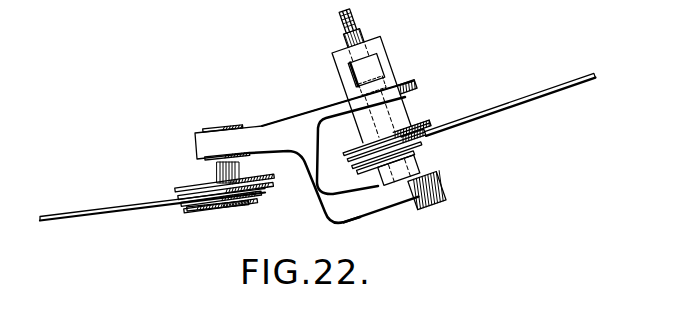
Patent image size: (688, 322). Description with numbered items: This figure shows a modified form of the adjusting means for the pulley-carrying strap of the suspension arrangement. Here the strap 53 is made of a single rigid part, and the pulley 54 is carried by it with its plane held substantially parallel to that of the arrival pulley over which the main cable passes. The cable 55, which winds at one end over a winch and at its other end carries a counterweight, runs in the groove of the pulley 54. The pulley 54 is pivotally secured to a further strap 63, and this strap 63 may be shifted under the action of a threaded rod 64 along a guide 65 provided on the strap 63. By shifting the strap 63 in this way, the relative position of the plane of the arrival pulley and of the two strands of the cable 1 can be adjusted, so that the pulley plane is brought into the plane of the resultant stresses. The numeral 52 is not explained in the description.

The cable 1 is at (115, 204).
The clamping plates 52 is at (206, 210).
The strap 53 is at (267, 106).
The pulley 54 is at (432, 142).
The cable 55 is at (541, 101).
The strap 63 is at (412, 108).
The threaded rod 64 is at (407, 177).
The guide 65 is at (346, 45).